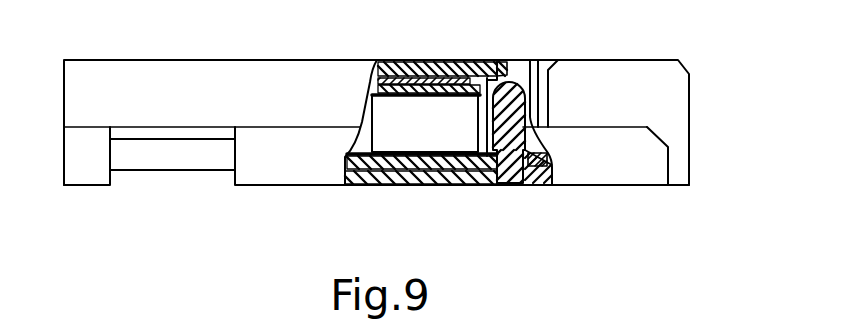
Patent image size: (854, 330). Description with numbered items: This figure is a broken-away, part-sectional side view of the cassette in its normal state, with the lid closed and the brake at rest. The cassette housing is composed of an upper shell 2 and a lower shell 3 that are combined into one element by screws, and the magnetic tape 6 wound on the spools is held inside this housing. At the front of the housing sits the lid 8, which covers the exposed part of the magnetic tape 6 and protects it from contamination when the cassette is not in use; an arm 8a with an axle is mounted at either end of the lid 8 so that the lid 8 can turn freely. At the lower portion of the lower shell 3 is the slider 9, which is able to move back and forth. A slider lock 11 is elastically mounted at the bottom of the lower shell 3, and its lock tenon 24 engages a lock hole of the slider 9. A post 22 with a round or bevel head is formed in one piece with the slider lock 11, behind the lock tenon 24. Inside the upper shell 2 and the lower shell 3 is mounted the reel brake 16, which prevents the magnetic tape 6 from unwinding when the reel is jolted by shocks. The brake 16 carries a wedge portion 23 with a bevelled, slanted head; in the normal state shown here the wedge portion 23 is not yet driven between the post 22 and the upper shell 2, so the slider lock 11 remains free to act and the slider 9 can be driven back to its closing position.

The upper shell 2 is at (204, 60).
The lower shell 3 is at (85, 187).
The magnetic tape 6 is at (420, 137).
The lid 8 is at (690, 124).
The arm 8a is at (614, 65).
The slider 9 is at (288, 187).
The slider lock 11 is at (443, 157).
The reel brake 16 is at (375, 79).
The post 22 is at (512, 80).
The wedge portion 23 is at (493, 70).
The lock tenon 24 is at (523, 187).